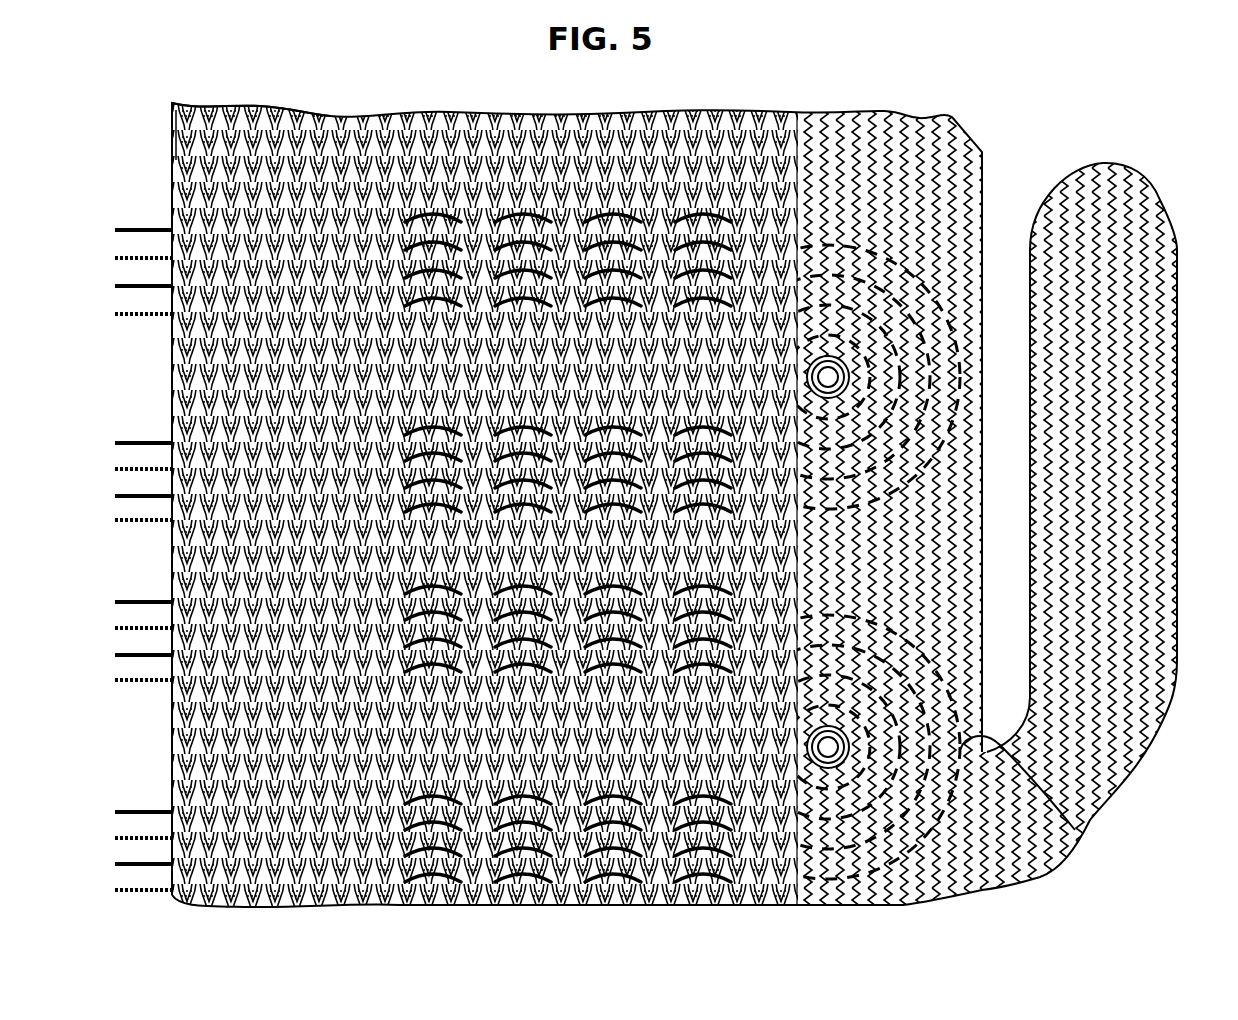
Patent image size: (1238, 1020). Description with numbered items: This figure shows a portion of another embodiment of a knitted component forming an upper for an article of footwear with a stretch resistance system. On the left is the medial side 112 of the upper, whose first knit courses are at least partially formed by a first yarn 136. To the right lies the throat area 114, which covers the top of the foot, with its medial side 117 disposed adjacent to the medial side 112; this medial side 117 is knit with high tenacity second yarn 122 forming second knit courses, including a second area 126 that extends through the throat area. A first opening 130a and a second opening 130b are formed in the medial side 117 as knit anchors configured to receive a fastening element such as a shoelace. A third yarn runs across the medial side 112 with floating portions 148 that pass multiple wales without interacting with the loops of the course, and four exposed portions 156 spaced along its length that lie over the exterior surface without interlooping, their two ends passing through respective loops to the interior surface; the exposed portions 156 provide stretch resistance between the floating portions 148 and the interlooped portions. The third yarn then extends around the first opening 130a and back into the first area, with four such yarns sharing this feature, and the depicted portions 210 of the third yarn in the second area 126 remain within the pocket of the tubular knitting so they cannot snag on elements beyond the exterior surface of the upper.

The medial side 112 is at (312, 118).
The first yarn 136 is at (202, 127).
The floating portion 148 is at (468, 213).
The exposed portion 156 is at (613, 213).
The second yarn 122 is at (707, 213).
The medial side of the throat area 117 is at (907, 117).
The second opening 130b is at (838, 353).
The first opening 130a is at (913, 750).
The throat area 114 is at (1130, 745).
The second area 126 is at (1080, 833).
The portions of the third yarn 210 is at (873, 883).